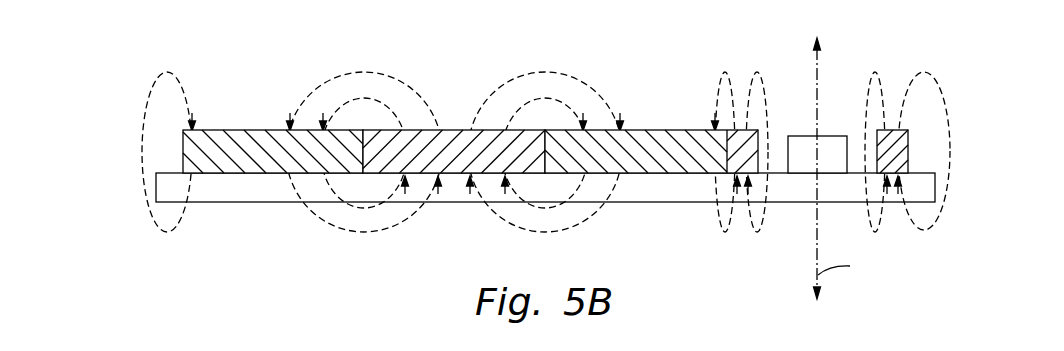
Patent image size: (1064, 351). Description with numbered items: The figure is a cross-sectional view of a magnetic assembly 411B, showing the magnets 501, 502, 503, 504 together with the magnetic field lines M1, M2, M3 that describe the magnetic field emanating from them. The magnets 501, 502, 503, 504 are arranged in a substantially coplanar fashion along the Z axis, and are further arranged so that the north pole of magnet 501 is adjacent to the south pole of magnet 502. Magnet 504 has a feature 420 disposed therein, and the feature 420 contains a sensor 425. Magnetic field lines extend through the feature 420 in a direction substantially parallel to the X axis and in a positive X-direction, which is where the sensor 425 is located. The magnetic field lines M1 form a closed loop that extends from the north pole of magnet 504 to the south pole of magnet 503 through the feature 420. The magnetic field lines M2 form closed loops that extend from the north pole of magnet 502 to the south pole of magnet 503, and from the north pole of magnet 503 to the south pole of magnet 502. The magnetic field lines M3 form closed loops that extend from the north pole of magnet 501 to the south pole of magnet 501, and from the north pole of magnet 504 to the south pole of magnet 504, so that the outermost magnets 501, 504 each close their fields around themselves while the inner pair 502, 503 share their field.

The magnetic assembly 411B is at (962, 232).
The feature 420 is at (857, 165).
The sensor 425 is at (802, 165).
The magnet 501 is at (228, 140).
The magnet 502 is at (455, 140).
The magnet 503 is at (637, 140).
The magnet 504 is at (884, 129).
The magnetic field lines M1 is at (757, 73).
The magnetic field lines M2 is at (355, 98).
The magnetic field lines M3 is at (142, 152).